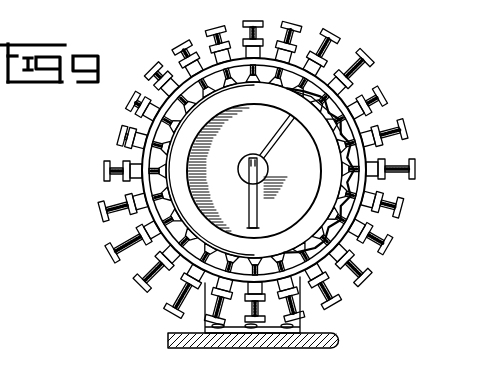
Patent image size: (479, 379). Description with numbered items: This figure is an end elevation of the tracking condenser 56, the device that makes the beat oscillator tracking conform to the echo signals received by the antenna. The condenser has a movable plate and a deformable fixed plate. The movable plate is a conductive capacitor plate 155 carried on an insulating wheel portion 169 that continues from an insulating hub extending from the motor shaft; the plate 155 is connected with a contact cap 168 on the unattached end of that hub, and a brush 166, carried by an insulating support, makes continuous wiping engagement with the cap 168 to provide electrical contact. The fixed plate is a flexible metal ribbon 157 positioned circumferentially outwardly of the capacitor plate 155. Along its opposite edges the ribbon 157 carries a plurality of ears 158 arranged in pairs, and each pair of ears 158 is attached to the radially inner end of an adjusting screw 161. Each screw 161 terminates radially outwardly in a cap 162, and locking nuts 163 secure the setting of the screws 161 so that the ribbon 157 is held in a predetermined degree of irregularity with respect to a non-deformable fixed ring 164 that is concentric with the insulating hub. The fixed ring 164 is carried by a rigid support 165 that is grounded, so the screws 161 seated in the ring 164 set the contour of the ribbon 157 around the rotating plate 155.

The tracking condenser 56 is at (392, 317).
The conductive capacitor plate 155 is at (286, 119).
The flexible metal ribbon 157 is at (163, 211).
The ears 158 is at (305, 96).
The adjusting screw 161 is at (318, 57).
The cap 162 is at (331, 41).
The locking nuts 163 is at (308, 37).
The fixed ring 164 is at (350, 91).
The rigid support 165 is at (297, 322).
The brush 166 is at (250, 209).
The contact cap 168 is at (262, 166).
The wheel portion 169 is at (300, 187).